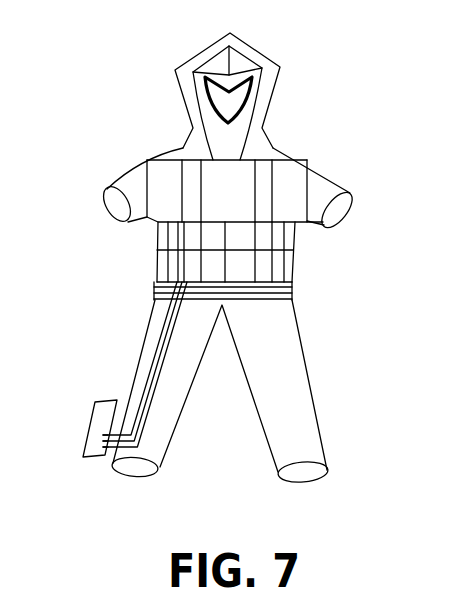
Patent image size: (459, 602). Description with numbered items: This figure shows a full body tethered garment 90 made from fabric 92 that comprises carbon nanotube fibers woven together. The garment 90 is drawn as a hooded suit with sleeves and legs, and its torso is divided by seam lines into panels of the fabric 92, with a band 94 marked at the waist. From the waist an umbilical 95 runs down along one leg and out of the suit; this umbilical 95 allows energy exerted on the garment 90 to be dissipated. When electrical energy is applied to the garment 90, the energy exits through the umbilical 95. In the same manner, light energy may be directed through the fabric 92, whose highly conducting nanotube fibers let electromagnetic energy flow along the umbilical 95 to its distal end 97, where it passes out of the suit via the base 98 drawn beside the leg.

The garment 90 is at (339, 62).
The fabric 92 is at (280, 210).
The waist band 94 is at (298, 280).
The umbilical 95 is at (162, 342).
The distal end 97 is at (100, 445).
The base 98 is at (102, 415).